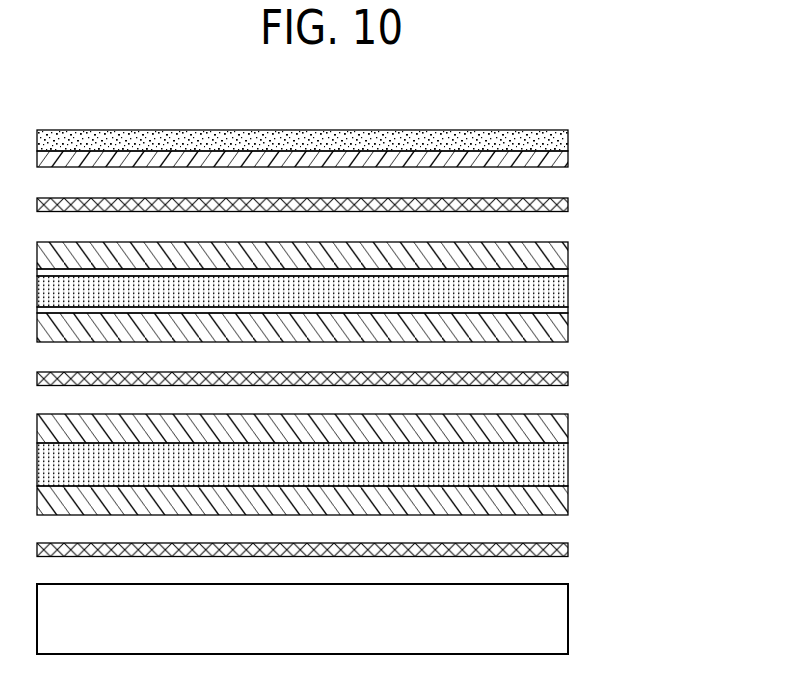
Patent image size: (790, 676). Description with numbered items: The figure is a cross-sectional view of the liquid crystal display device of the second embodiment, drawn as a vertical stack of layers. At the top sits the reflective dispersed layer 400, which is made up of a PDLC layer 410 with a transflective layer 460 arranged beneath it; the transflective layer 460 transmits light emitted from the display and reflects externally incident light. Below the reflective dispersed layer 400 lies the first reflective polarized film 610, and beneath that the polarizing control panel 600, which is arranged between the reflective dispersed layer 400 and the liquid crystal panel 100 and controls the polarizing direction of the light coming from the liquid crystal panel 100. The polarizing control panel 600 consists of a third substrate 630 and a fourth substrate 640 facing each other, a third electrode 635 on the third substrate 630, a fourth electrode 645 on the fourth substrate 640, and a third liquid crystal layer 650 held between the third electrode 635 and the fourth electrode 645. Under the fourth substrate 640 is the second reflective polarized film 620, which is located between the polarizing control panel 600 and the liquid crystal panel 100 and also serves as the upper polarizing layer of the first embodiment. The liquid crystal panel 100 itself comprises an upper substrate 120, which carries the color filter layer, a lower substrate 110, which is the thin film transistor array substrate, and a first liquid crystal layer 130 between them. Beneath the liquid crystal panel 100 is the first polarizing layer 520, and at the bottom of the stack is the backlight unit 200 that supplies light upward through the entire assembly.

The reflective dispersed layer 400 is at (373, 157).
The PDLC layer 410 is at (553, 138).
The transflective layer 460 is at (555, 160).
The first reflective polarized film 610 is at (555, 203).
The polarizing control panel 600 is at (373, 301).
The third substrate 630 is at (553, 254).
The third electrode 635 is at (558, 271).
The third liquid crystal layer 650 is at (553, 292).
The fourth electrode 645 is at (555, 310).
The fourth substrate 640 is at (343, 340).
The second reflective polarized film 620 is at (558, 378).
The liquid crystal display panel 100 is at (373, 467).
The upper substrate 120 is at (553, 429).
The first liquid crystal layer 130 is at (553, 468).
The lower substrate 110 is at (553, 500).
The first polarizing layer 520 is at (558, 549).
The backlight unit 200 is at (553, 621).